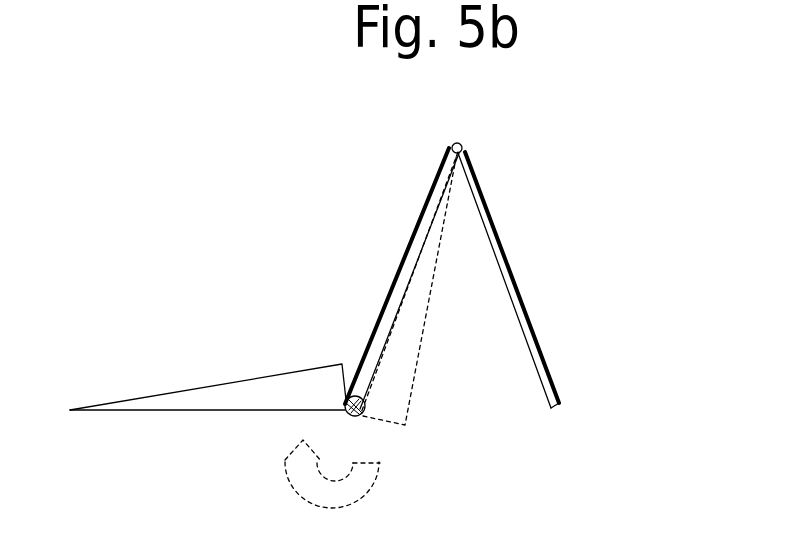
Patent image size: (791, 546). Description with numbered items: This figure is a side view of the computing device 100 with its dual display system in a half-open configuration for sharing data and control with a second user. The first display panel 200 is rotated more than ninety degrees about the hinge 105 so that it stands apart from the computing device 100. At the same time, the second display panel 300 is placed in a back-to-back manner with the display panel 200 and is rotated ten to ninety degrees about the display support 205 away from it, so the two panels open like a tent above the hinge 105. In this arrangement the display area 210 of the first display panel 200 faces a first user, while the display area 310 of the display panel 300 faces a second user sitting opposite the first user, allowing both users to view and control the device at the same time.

The computing device 100 is at (203, 461).
The hinge 105 is at (361, 415).
The display panel 200 is at (455, 264).
The display support 205 is at (456, 145).
The display area 210 is at (395, 278).
The display panel 300 is at (556, 263).
The display area 310 is at (530, 302).